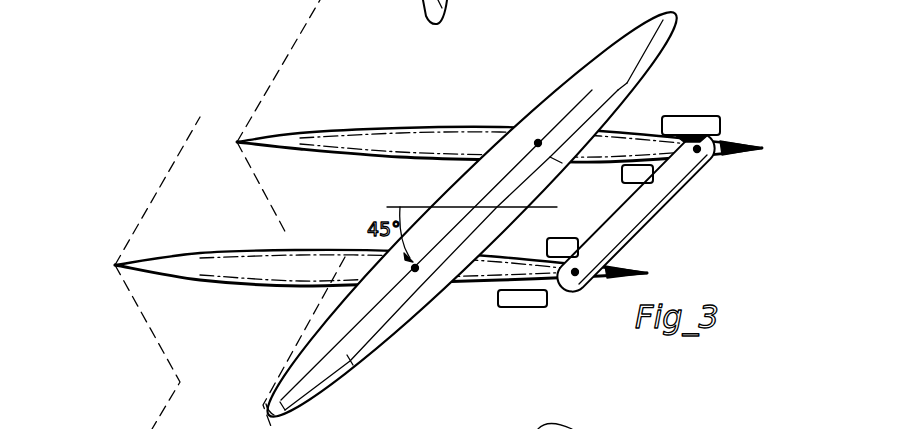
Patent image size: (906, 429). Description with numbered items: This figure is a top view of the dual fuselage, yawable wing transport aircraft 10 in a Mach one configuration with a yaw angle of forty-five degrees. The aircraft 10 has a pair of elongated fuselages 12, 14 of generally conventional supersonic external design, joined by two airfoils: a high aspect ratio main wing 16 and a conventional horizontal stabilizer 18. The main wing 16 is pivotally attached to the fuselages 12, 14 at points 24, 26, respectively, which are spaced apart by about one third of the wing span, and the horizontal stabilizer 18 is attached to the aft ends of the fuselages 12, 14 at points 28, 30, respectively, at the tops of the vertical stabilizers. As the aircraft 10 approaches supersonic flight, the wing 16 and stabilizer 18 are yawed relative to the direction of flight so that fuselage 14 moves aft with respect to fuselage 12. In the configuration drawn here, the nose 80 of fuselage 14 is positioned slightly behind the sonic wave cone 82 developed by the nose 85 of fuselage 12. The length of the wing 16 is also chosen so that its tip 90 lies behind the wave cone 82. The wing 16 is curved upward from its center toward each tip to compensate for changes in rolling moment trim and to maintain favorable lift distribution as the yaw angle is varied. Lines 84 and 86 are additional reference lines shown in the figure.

The aircraft 10 is at (439, 214).
The fuselage 12 is at (200, 251).
The fuselage 14 is at (338, 128).
The main wing 16 is at (532, 419).
The horizontal stabilizer 18 is at (659, 216).
The pivot point 24 is at (413, 283).
The pivot point 26 is at (533, 139).
The attachment point 28 is at (567, 288).
The attachment point 30 is at (704, 145).
The nose 80 is at (237, 142).
The sonic wave cone 82 is at (174, 161).
The reference line 84 is at (270, 85).
The nose 85 is at (115, 265).
The reference line 86 is at (315, 316).
The wing tip 90 is at (263, 395).